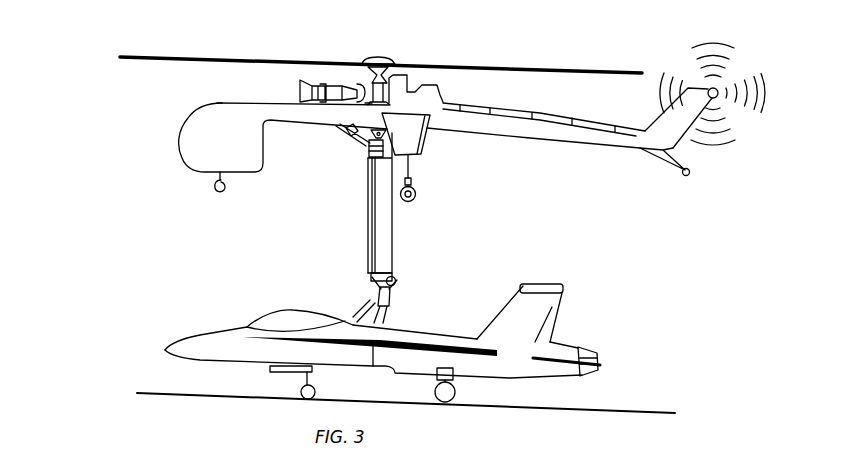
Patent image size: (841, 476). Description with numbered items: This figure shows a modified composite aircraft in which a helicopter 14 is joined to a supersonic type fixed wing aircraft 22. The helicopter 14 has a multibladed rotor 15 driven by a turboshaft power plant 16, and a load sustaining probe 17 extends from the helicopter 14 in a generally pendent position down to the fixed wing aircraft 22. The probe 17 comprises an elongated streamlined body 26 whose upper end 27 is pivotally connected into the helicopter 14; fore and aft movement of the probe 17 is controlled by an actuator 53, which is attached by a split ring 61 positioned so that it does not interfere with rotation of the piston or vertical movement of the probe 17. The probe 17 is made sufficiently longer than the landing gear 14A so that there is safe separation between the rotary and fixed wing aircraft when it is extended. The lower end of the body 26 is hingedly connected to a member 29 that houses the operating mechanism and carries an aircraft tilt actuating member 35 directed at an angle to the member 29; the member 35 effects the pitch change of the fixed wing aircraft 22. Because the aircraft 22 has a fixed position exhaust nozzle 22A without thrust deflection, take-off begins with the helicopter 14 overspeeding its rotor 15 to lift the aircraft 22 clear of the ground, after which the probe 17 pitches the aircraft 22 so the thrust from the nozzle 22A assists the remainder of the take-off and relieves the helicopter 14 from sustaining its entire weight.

The helicopter 14 is at (184, 140).
The landing gear 14A is at (413, 178).
The multibladed rotor 15 is at (399, 53).
The turboshaft power plant 16 is at (333, 90).
The load sustaining probe 17 is at (362, 220).
The fixed wing aircraft 22 is at (162, 330).
The fixed position exhaust nozzle 22A is at (575, 350).
The elongated streamlined body 26 is at (385, 243).
The upper end of probe body 27 is at (413, 172).
The probe member 29 is at (392, 291).
The aircraft tilt actuating member 35 is at (353, 303).
The actuator 53 is at (348, 139).
The split ring 61 is at (372, 158).